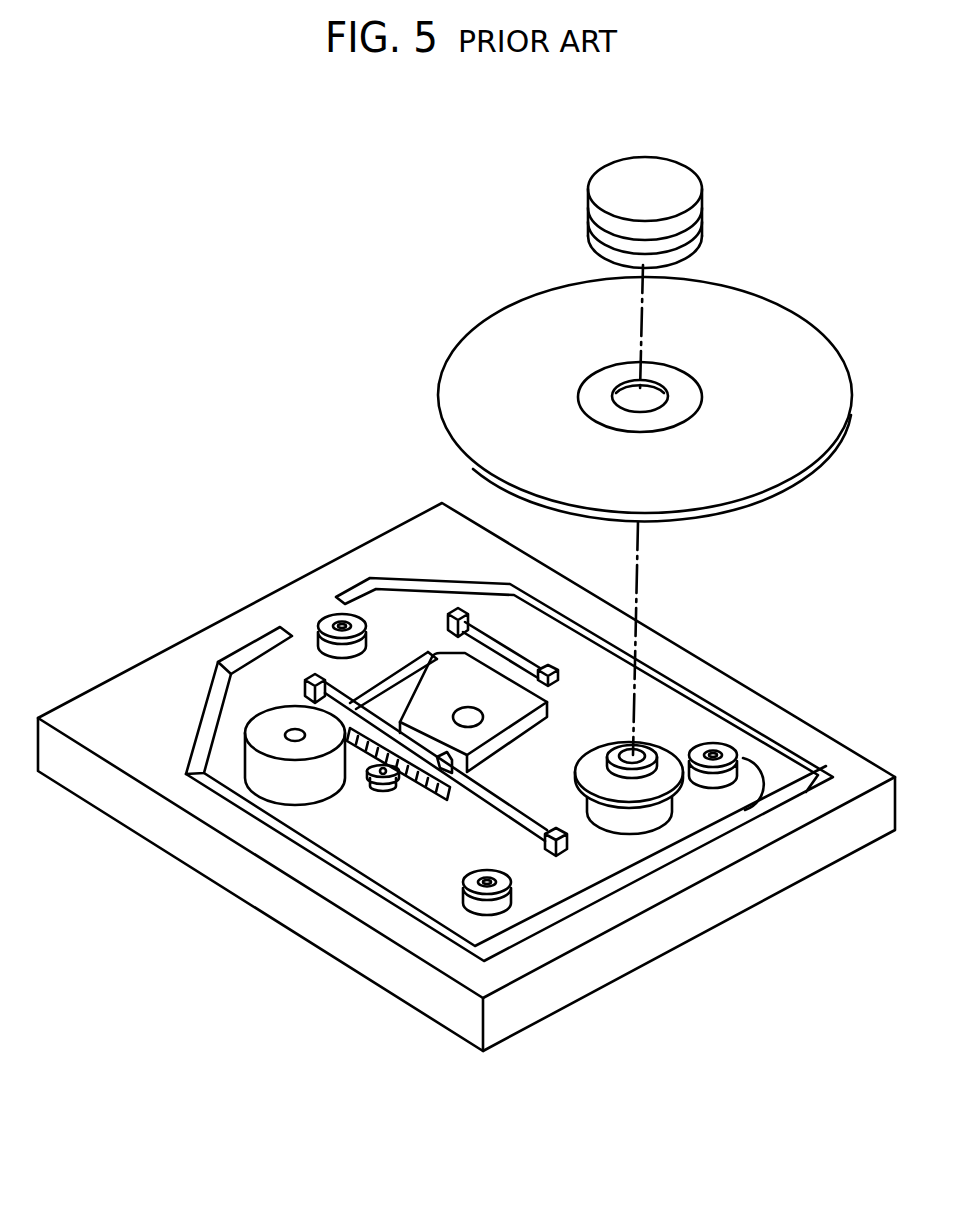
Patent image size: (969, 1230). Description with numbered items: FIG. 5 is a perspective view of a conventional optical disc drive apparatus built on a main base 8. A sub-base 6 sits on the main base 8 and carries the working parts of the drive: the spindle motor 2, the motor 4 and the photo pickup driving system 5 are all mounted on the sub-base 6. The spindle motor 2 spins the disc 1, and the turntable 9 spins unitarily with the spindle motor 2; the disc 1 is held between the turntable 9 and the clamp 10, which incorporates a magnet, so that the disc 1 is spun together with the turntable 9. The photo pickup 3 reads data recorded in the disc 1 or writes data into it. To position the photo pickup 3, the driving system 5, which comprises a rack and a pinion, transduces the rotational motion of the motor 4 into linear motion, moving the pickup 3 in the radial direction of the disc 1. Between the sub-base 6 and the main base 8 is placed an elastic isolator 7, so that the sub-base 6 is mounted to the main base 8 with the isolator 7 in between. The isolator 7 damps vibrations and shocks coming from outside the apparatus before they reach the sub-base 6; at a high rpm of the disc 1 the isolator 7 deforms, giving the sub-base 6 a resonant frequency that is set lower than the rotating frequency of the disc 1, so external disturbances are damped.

The disc 1 is at (490, 358).
The spindle motor 2 is at (647, 823).
The photo pickup 3 is at (470, 697).
The motor 4 is at (268, 783).
The photo pickup driving system 5 is at (407, 790).
The sub-base 6 is at (262, 677).
The elastic isolator 7 is at (740, 750).
The main base 8 is at (303, 598).
The turntable 9 is at (663, 757).
The clamp 10 is at (603, 194).